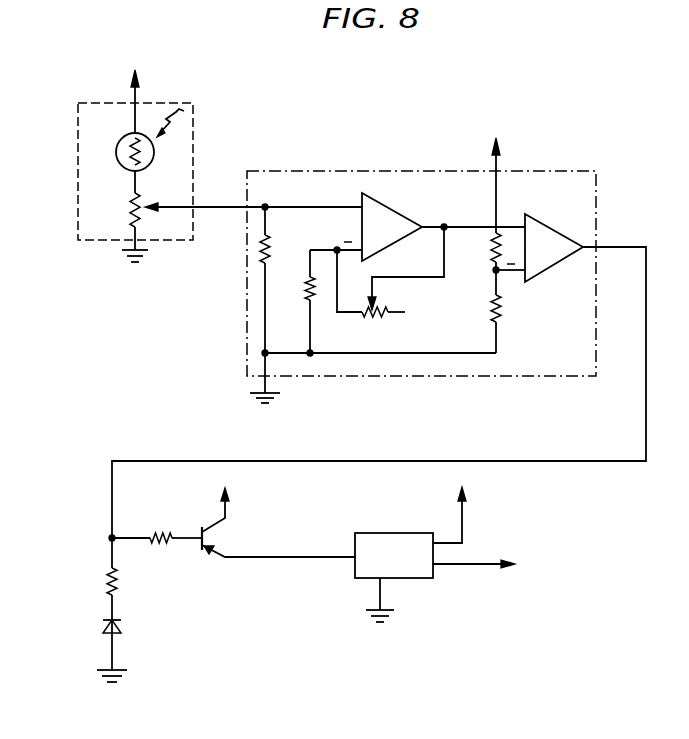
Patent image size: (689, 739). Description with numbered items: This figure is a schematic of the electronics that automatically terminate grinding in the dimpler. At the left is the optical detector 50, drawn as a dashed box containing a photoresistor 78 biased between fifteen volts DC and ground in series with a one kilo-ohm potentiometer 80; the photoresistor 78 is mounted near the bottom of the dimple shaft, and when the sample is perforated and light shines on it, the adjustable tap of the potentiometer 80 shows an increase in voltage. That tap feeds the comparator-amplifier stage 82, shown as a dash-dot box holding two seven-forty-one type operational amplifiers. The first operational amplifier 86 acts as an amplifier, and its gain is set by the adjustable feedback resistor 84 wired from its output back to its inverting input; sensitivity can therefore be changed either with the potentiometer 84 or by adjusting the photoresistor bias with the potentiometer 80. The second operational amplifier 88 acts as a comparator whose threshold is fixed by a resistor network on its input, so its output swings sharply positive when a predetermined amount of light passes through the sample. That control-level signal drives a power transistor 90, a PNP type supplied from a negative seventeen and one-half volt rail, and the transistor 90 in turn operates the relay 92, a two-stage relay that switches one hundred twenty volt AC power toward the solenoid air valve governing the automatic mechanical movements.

The optical detector 50 is at (95, 103).
The photoresistor 78 is at (154, 150).
The potentiometer 80 is at (130, 207).
The comparator-amplifier stage 82 is at (304, 171).
The adjustable feedback resistor 84 is at (375, 318).
The first operational amplifier 86 is at (389, 236).
The second operational amplifier 88 is at (552, 260).
The power transistor 90 is at (213, 536).
The relay 92 is at (379, 533).